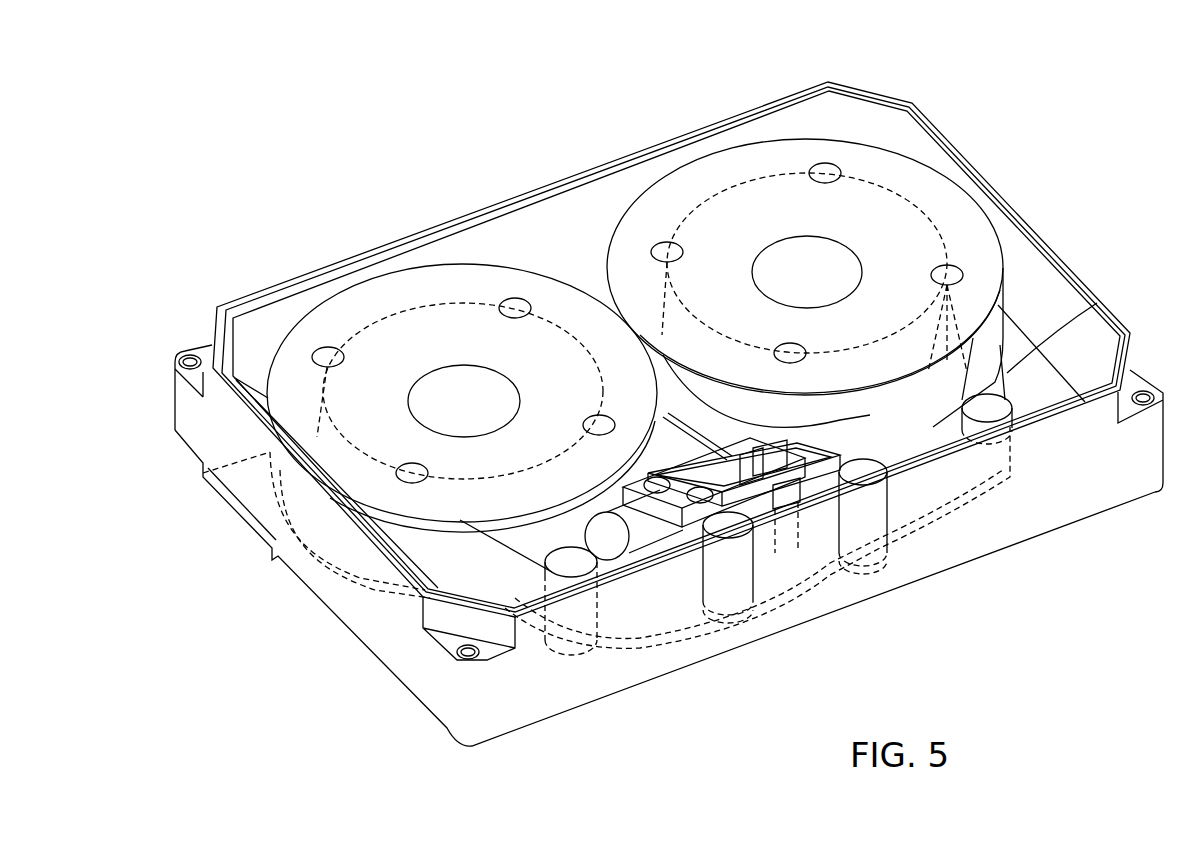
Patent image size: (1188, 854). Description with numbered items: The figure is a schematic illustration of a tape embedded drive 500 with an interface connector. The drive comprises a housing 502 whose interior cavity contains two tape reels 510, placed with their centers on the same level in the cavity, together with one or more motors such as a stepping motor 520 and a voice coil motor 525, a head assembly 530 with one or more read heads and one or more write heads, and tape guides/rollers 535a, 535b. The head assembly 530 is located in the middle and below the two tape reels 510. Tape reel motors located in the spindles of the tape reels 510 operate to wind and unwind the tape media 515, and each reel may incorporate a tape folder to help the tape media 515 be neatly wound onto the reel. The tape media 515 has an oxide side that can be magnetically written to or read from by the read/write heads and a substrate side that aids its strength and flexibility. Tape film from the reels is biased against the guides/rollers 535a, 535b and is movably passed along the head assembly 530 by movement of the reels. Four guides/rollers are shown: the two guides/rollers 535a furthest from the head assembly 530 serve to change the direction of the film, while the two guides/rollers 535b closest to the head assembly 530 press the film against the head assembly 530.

The tape embedded drive 500 is at (203, 79).
The housing 502 is at (738, 647).
The tape reel 510 is at (758, 236).
The stepping motor 520 is at (456, 355).
The tape media 515 is at (1097, 303).
The voice coil motor 525 is at (637, 530).
The head assembly 530 is at (815, 510).
The tape guide/roller 535a is at (567, 562).
The tape guide/roller 535b is at (722, 523).